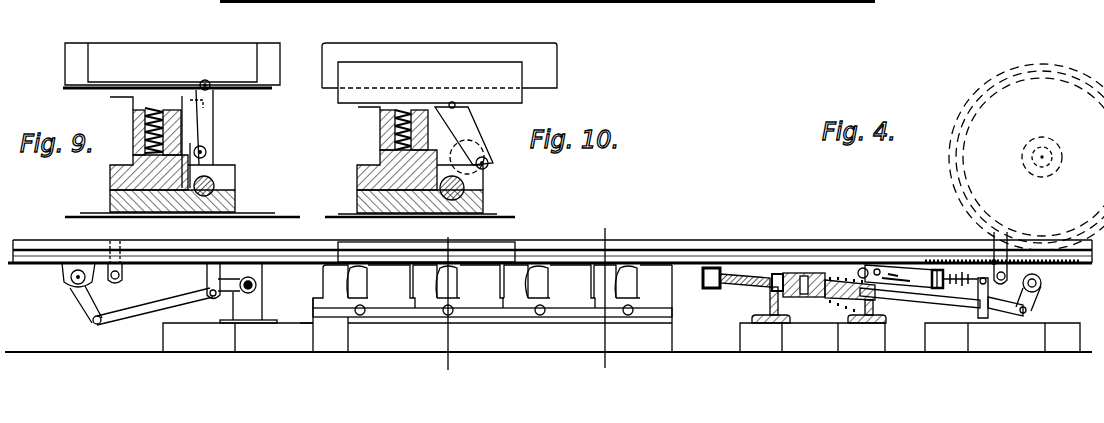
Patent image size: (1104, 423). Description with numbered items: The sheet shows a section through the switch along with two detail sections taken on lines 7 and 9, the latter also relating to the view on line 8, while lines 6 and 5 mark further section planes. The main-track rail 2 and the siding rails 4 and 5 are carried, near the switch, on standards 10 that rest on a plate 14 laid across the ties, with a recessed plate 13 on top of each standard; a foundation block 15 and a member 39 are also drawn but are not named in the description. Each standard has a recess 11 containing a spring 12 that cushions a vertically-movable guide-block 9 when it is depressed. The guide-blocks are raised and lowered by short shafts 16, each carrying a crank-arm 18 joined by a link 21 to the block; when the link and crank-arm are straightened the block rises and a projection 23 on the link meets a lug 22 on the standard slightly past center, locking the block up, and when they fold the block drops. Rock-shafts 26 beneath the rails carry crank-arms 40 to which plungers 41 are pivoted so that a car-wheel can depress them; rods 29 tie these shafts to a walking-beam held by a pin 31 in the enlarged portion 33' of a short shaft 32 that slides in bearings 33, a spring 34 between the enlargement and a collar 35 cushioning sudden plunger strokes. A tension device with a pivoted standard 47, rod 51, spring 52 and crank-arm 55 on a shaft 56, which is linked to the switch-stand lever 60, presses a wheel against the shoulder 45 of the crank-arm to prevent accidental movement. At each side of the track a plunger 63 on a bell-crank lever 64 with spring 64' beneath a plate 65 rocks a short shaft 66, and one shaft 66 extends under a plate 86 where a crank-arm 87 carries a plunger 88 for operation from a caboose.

In FIG. 4, the main-track rail 2 is at (755, 243).
In FIG. 9, the siding rail 4 is at (68, 63).
In FIG. 4, the siding rail 4 is at (200, 244).
In FIG. 10, the siding rail 5 is at (548, 60).
In FIG. 4, the siding rail 5 is at (603, 301).
In FIG. 4, the section line 6 6 is at (605, 0).
In FIG. 4, the section line 7 7 is at (444, 305).
In FIG. 4, the section line 8 8 is at (449, 0).
In FIG. 9, the guide-block 9 is at (172, 62).
In FIG. 10, the guide-block 9 is at (430, 82).
In FIG. 4, the guide-block 9 is at (380, 251).
In FIG. 9, the standard 10 is at (112, 170).
In FIG. 10, the standard 10 is at (378, 153).
In FIG. 4, the standard 10 is at (464, 286).
In FIG. 9, the recess 11 is at (110, 97).
In FIG. 10, the recess 11 is at (358, 107).
In FIG. 9, the spring 12 is at (152, 108).
In FIG. 10, the spring 12 is at (380, 125).
In FIG. 4, the plate 13 is at (515, 298).
In FIG. 9, the plate 14 is at (112, 201).
In FIG. 10, the plate 14 is at (360, 203).
In FIG. 4, the plate 14 is at (403, 318).
In FIG. 4, the foundation block 15 is at (684, 338).
In FIG. 10, the short shaft 16 is at (484, 203).
In FIG. 4, the short shaft 16 is at (361, 316).
In FIG. 10, the crank-arm 18 is at (489, 163).
In FIG. 9, the link 21 is at (212, 118).
In FIG. 10, the link 21 is at (478, 150).
In FIG. 4, the link 21 is at (368, 283).
In FIG. 9, the lug 22 is at (213, 182).
In FIG. 10, the lug 22 is at (436, 147).
In FIG. 9, the projection 23 is at (205, 148).
In FIG. 10, the projection 23 is at (470, 189).
In FIG. 4, the short shaft 26 is at (1042, 287).
In FIG. 4, the rod 29 is at (926, 302).
In FIG. 4, the pin 31 is at (805, 273).
In FIG. 4, the short shaft 32 is at (835, 282).
In FIG. 4, the bearing 33 is at (896, 326).
In FIG. 4, the enlarged portion 33' is at (779, 355).
In FIG. 4, the spring 34 is at (835, 325).
In FIG. 4, the collar 35 is at (868, 268).
In FIG. 4, the support post 39 is at (768, 298).
In FIG. 4, the crank-arm 40 is at (1068, 267).
In FIG. 4, the plunger 41 is at (992, 243).
In FIG. 4, the shoulder 45 is at (973, 0).
In FIG. 4, the pivoted standard 47 is at (976, 303).
In FIG. 4, the rod 51 is at (901, 279).
In FIG. 4, the spring 52 is at (955, 284).
In FIG. 4, the crank-arm 55 is at (884, 287).
In FIG. 4, the shaft 56 is at (866, 272).
In FIG. 4, the lever 60 is at (700, 0).
In FIG. 4, the vertically-movable plunger 63 is at (123, 272).
In FIG. 4, the bell-crank lever 64 is at (130, 310).
In FIG. 4, the spring 64' is at (39, 272).
In FIG. 4, the plate 65 is at (62, 286).
In FIG. 4, the short shaft 66 is at (250, 282).
In FIG. 4, the plate 86 is at (311, 276).
In FIG. 4, the crank-arm 87 is at (262, 300).
In FIG. 4, the plunger 88 is at (207, 272).